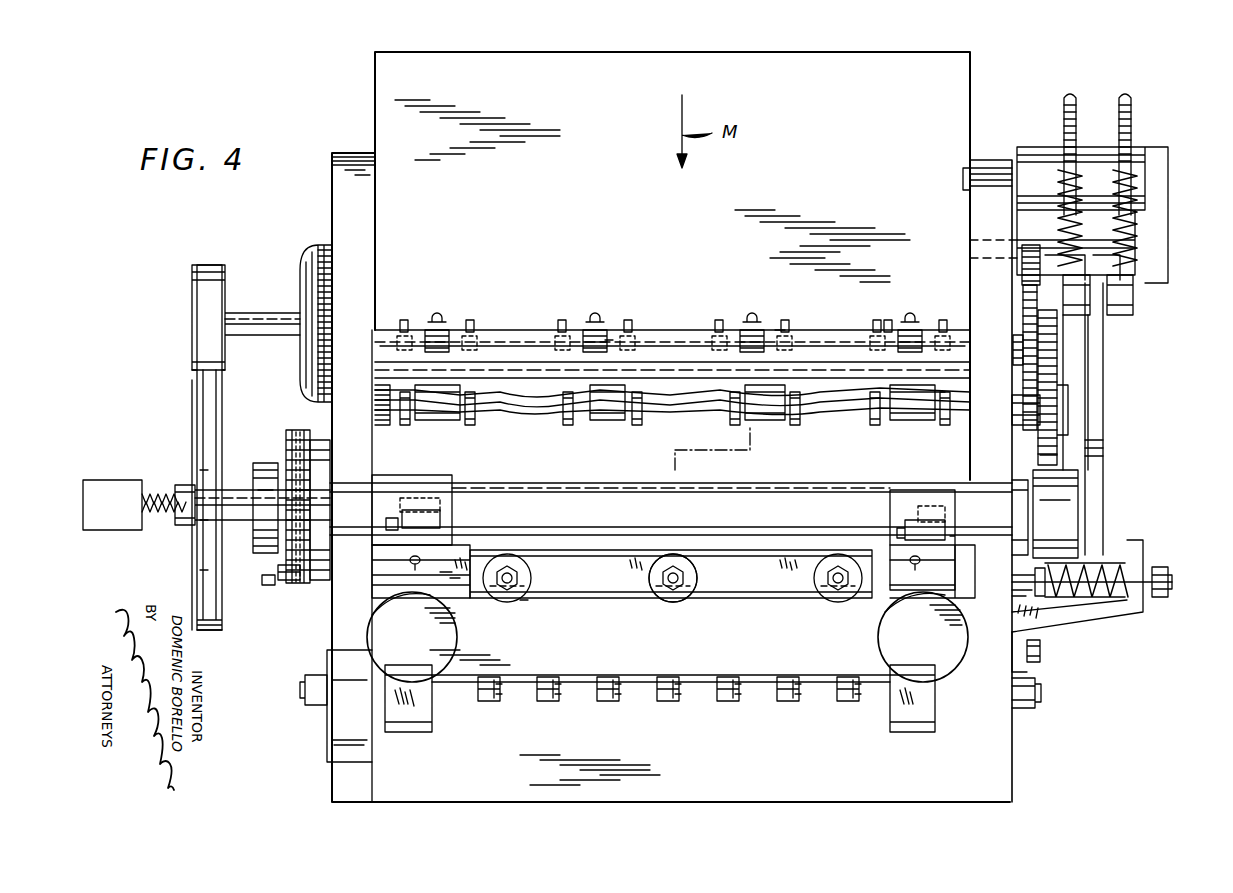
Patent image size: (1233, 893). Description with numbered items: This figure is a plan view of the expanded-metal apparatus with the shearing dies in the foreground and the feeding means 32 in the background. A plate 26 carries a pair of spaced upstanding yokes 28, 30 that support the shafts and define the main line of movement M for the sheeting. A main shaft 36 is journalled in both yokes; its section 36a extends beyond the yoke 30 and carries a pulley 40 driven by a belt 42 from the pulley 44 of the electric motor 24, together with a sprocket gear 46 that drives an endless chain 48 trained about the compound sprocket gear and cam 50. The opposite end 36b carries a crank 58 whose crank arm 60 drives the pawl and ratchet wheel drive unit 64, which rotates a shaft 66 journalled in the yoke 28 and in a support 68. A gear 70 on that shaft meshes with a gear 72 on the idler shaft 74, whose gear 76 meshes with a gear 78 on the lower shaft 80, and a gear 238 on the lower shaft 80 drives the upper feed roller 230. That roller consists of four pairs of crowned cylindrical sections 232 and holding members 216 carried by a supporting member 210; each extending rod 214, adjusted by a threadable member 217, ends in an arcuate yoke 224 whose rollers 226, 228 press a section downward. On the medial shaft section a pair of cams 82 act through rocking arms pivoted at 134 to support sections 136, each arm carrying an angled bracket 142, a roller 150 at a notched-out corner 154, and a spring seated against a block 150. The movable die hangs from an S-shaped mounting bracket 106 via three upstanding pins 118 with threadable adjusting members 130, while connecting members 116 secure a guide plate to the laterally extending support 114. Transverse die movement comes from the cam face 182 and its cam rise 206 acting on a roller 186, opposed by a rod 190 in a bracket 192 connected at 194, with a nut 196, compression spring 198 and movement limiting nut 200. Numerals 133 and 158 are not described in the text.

The electric motor 24 is at (305, 278).
The plate 26 is at (460, 87).
The yoke 28 is at (983, 157).
The yoke 30 is at (338, 210).
The feeding means 32 is at (690, 300).
The main shaft 36 is at (805, 494).
The main shaft section 36a is at (220, 492).
The main shaft end 36b is at (1023, 515).
The pulley 40 is at (218, 624).
The belt 42 is at (197, 406).
The pulley 44 is at (192, 324).
The sprocket gear 46 is at (278, 464).
The endless chain 48 is at (296, 430).
The compound sprocket gear and cam 50 is at (308, 585).
The crank 58 is at (1072, 480).
The crank arm 60 is at (1103, 414).
The pawl and ratchet wheel drive unit 64 is at (1128, 314).
The shaft 66 is at (1055, 240).
The support 68 is at (1160, 186).
The gear 70 is at (1025, 246).
The gear 72 is at (1023, 304).
The idler shaft 74 is at (1012, 354).
The gear 76 is at (1060, 342).
The gear 78 is at (1058, 452).
The lower shaft 80 is at (1016, 420).
The cams 82 is at (448, 544).
The S-shaped mounting bracket 106 is at (756, 600).
The laterally extending support 114 is at (765, 691).
The connecting members 116 is at (478, 698).
The upstanding pins 118 is at (516, 578).
The threadable adjusting member 130 is at (682, 573).
The washer 133 is at (530, 598).
The pivot mounting 134 is at (1030, 720).
The support section 136 is at (1012, 755).
The angled bracket 142 is at (375, 588).
The block 150 is at (938, 550).
The notched-out corner 154 is at (446, 562).
The rollers 158 is at (437, 630).
The cam face 182 is at (316, 462).
The roller 186 is at (303, 572).
The rod 190 is at (1012, 583).
The bracket 192 is at (1165, 530).
The bracket connection 194 is at (1034, 662).
The nut 196 is at (1030, 632).
The compression spring 198 is at (1096, 602).
The movement limiting nut 200 is at (1164, 600).
The cam rise 206 is at (310, 446).
The supporting member 210 is at (523, 330).
The extending rod 214 is at (902, 324).
The holding member 216 is at (436, 312).
The threadable member 217 is at (615, 348).
The arcuate yoke 224 is at (440, 422).
The roller 226 is at (778, 328).
The roller 228 is at (920, 430).
The upper feed roller 230 is at (646, 430).
The crowned cylindrical sections 232 is at (550, 410).
The gear 238 is at (382, 428).